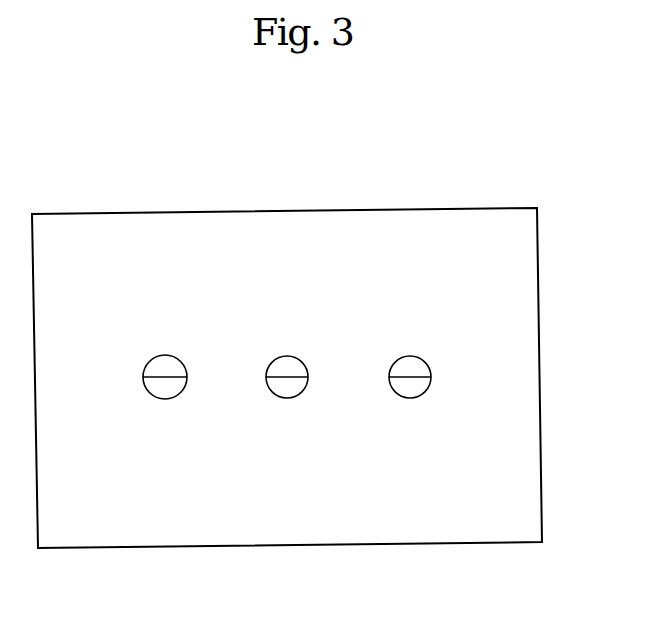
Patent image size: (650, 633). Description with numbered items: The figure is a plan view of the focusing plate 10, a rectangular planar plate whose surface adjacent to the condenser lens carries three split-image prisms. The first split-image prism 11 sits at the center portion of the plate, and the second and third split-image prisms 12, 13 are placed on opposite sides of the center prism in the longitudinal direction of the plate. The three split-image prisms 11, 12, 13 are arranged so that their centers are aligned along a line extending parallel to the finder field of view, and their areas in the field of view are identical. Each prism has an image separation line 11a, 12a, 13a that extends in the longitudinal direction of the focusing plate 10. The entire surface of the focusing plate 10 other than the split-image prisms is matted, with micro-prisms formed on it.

The focusing plate 10 is at (512, 296).
The first split-image prism 11 is at (298, 396).
The second split-image prism 12 is at (178, 396).
The third split-image prism 13 is at (421, 396).
The image separation line 11a is at (165, 376).
The image separation line 12a is at (287, 377).
The image separation line 13a is at (410, 377).